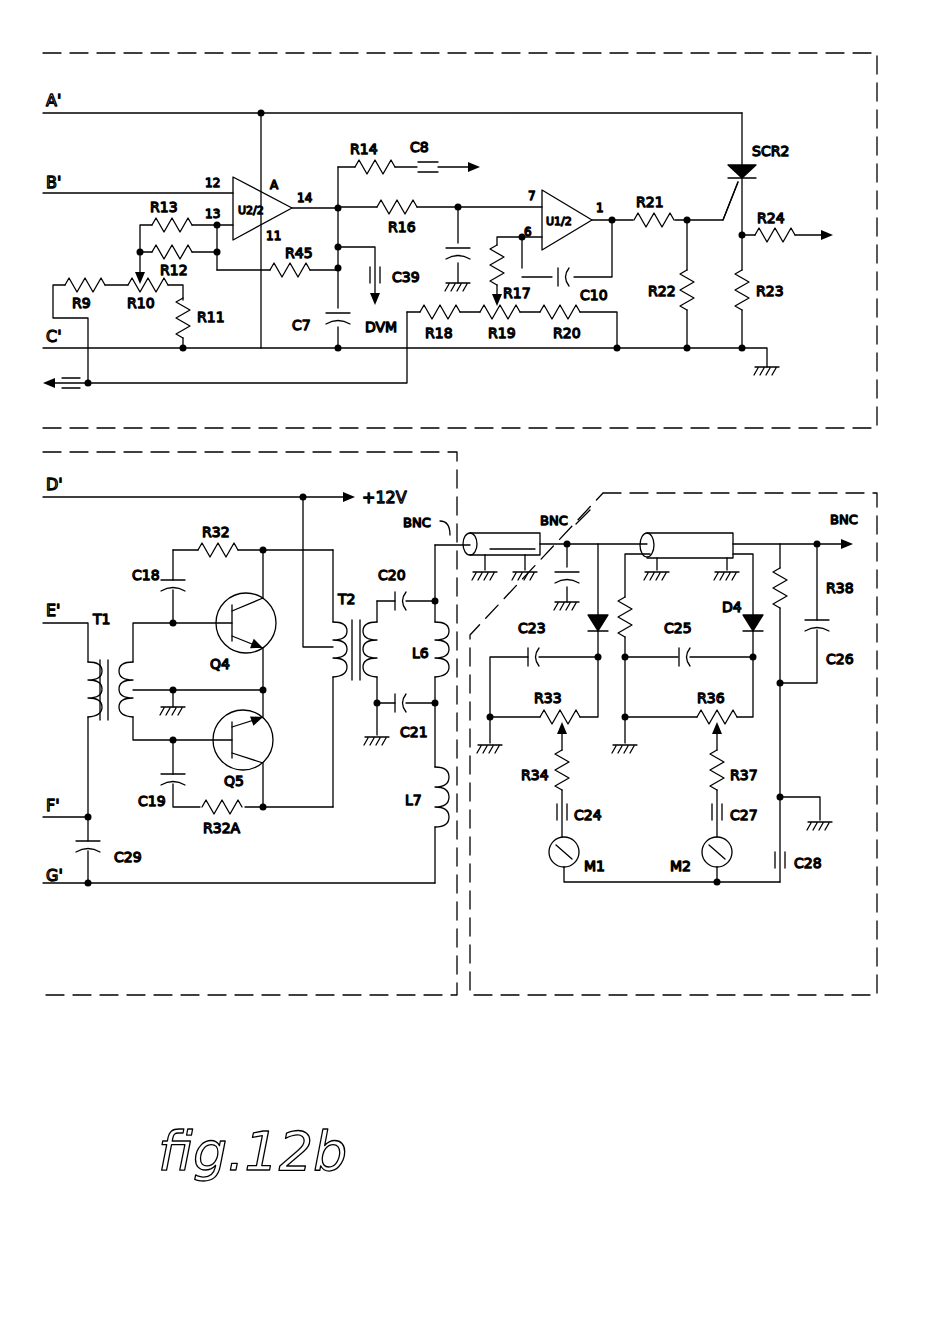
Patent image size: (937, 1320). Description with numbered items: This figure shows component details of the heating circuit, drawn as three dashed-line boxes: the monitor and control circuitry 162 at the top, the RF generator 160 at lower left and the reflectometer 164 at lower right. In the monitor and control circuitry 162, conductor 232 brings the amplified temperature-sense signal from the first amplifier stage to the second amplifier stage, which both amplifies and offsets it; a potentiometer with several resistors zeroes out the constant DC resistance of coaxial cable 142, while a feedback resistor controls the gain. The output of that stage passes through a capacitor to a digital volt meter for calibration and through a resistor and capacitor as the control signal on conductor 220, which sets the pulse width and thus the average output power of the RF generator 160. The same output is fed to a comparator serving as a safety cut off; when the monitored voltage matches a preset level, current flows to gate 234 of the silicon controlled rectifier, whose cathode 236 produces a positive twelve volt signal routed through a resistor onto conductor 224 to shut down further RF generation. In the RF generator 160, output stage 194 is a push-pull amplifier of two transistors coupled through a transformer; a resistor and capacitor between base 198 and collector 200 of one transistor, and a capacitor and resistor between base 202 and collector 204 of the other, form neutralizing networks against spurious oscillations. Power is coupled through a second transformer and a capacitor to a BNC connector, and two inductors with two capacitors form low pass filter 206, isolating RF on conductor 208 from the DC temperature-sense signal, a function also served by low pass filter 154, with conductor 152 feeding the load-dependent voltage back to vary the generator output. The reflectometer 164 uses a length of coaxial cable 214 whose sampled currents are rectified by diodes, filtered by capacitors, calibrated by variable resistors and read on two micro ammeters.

The monitor and control circuitry 162 is at (388, 50).
The conductor 232 is at (134, 112).
The conductor (CONTROL) 220 is at (448, 165).
The gate of silicon controlled rectifier SCR2 234 is at (732, 196).
The cathode of SCR2 236 is at (744, 196).
The conductor (SHUT DOWN) 224 is at (803, 231).
The RF generator 160 is at (283, 997).
The output stage 194 is at (318, 696).
The base of transistor Q4 198 is at (203, 628).
The collector of transistor Q4 200 is at (264, 576).
The base of transistor Q5 202 is at (199, 737).
The collector of transistor Q5 204 is at (268, 776).
The low pass filter 206 is at (420, 690).
The conductor 208 is at (435, 562).
The coaxial cable 142 is at (492, 533).
The conductor 152 is at (617, 538).
The low pass filter 154 is at (641, 554).
The coaxial cable 214 is at (705, 533).
The reflectometer 164 is at (655, 997).